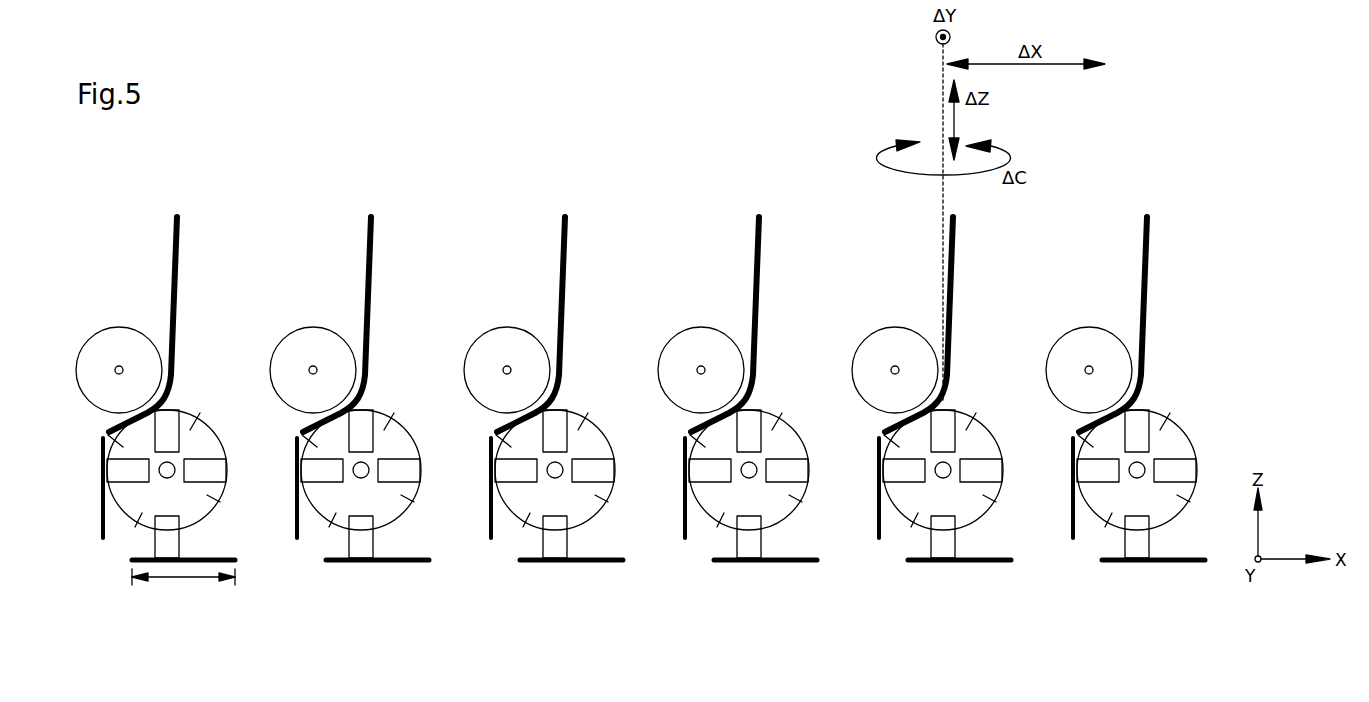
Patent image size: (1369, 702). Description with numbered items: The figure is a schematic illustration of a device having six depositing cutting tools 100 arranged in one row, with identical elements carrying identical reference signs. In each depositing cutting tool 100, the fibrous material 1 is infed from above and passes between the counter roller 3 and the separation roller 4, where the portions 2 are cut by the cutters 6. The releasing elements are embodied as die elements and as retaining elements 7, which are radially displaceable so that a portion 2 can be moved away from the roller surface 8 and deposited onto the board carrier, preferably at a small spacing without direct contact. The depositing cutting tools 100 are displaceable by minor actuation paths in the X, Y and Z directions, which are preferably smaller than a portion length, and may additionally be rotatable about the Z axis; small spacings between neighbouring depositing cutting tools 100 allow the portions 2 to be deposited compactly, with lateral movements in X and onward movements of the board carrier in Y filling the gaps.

The fibrous material 1 is at (176, 301).
The portion 2 is at (213, 559).
The counter roller 3 is at (104, 330).
The separation roller 4 is at (210, 447).
The cutter 6 is at (205, 414).
The retaining element 7 is at (200, 473).
The roller surface 8 is at (186, 410).
The depositing cutting tool 100 is at (238, 310).